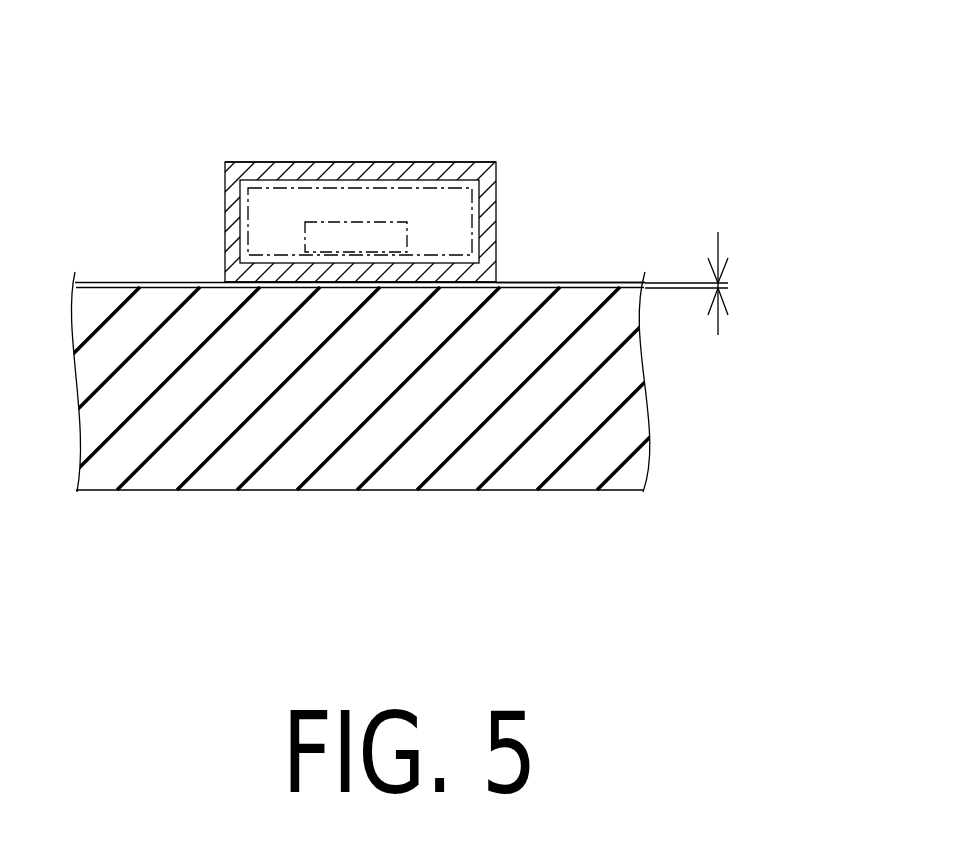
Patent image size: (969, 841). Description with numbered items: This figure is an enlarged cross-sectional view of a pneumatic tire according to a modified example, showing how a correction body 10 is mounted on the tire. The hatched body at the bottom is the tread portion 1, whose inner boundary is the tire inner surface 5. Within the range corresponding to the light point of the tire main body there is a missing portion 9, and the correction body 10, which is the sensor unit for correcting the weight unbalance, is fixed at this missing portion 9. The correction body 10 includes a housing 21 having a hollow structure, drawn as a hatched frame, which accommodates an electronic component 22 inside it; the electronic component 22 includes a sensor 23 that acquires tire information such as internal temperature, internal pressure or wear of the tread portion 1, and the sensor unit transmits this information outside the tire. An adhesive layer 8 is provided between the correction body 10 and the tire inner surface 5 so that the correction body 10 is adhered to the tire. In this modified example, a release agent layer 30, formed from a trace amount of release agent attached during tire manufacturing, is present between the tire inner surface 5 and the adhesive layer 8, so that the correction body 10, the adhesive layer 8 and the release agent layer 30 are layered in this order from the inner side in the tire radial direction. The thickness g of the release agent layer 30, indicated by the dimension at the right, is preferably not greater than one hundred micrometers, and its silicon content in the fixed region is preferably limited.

The tread portion 1 is at (366, 492).
The tire inner surface 5 is at (137, 282).
The adhesive layer 8 is at (268, 278).
The missing portion 9 is at (163, 118).
The correction body 10 is at (497, 162).
The housing 21 is at (340, 172).
The electronic component 22 is at (445, 210).
The sensor 23 is at (388, 234).
The release agent layer 30 is at (577, 282).
The thickness g is at (702, 283).